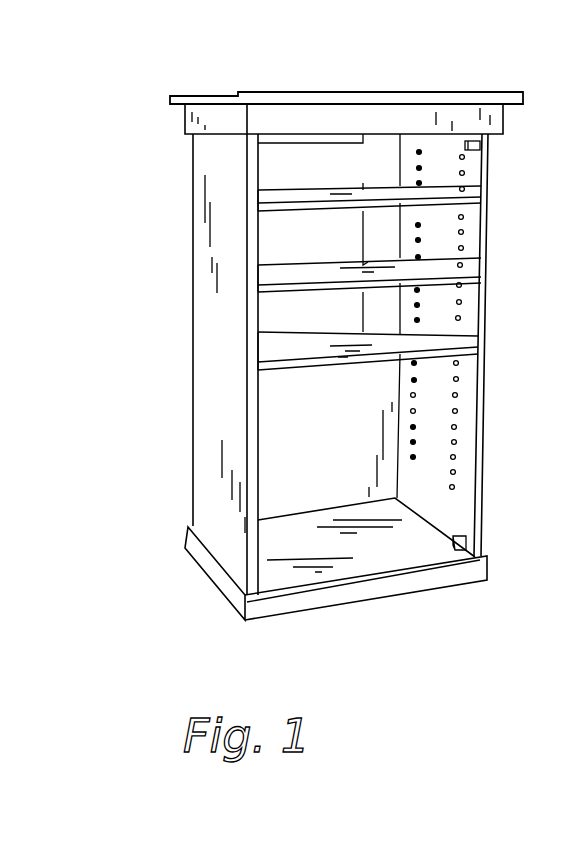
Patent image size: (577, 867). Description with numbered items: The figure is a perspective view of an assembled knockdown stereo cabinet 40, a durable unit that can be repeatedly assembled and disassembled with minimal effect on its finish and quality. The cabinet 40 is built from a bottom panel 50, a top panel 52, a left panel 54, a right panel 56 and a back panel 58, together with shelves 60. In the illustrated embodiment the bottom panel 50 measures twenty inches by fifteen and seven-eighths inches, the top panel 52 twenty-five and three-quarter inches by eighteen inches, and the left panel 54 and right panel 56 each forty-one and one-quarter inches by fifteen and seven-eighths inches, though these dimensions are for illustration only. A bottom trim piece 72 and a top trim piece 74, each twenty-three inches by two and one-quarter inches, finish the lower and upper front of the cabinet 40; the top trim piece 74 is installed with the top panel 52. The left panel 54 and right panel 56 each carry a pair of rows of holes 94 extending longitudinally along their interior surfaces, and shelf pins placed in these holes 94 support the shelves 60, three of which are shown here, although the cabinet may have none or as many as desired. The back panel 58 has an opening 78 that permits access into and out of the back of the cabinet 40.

The cabinet 40 is at (502, 227).
The bottom panel 50 is at (334, 520).
The top panel 52 is at (340, 97).
The left panel 54 is at (213, 310).
The right panel 56 is at (470, 318).
The back panel 58 is at (390, 184).
The shelf 60 is at (314, 203).
The bottom trim piece 72 is at (287, 605).
The top trim piece 74 is at (421, 117).
The opening 78 is at (345, 249).
The holes 94 is at (413, 395).